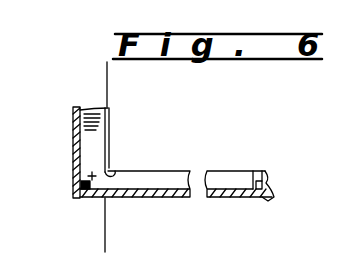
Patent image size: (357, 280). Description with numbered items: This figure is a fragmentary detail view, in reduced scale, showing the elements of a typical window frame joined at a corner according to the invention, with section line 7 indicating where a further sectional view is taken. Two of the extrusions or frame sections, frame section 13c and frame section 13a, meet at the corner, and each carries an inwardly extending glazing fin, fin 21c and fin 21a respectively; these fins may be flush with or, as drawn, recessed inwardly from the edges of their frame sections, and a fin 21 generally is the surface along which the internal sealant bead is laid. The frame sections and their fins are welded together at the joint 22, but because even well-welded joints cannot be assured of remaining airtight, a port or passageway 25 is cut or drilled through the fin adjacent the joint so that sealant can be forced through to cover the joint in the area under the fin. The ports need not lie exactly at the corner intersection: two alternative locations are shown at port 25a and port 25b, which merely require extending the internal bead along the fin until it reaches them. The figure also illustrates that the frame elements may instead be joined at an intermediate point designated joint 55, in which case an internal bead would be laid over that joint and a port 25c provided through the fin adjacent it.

The section line 7 is at (110, 75).
The frame section 13c is at (73, 125).
The frame section 13a is at (262, 198).
The glazing fin 21 is at (75, 108).
The glazing fin 21a is at (224, 151).
The glazing fin 21c is at (108, 114).
The joint 22 is at (112, 172).
The port or passageway 25 is at (80, 185).
The port 25a is at (73, 158).
The port 25b is at (118, 203).
The port 25c is at (253, 174).
The intermediate joint 55 is at (268, 172).